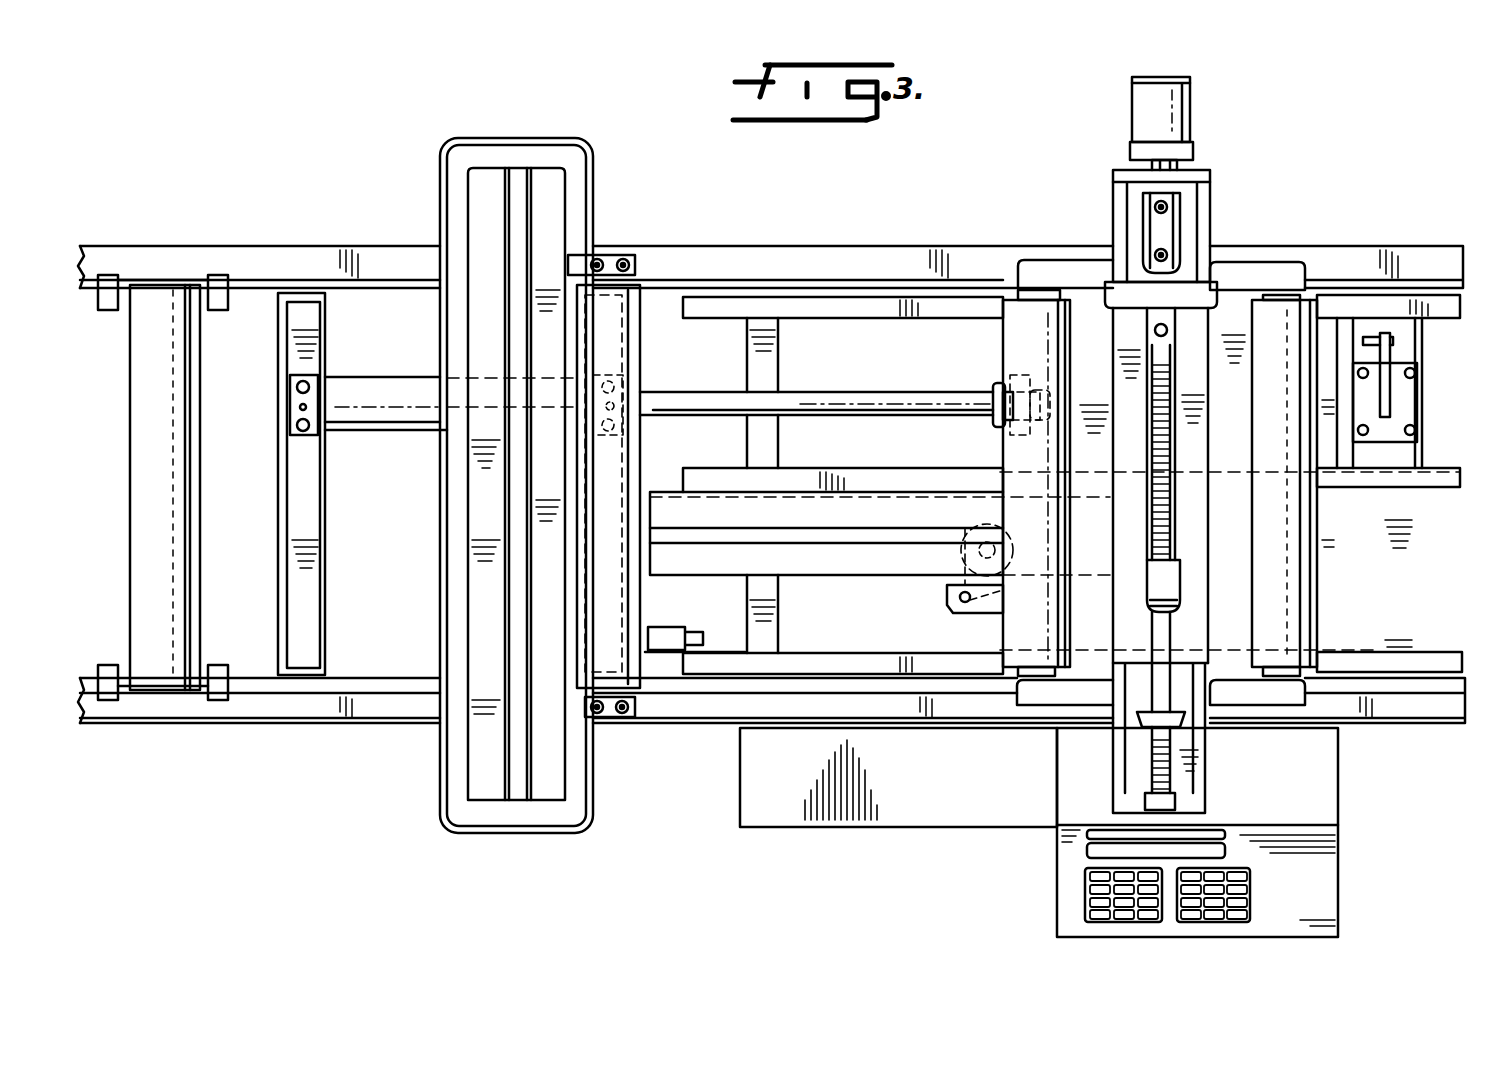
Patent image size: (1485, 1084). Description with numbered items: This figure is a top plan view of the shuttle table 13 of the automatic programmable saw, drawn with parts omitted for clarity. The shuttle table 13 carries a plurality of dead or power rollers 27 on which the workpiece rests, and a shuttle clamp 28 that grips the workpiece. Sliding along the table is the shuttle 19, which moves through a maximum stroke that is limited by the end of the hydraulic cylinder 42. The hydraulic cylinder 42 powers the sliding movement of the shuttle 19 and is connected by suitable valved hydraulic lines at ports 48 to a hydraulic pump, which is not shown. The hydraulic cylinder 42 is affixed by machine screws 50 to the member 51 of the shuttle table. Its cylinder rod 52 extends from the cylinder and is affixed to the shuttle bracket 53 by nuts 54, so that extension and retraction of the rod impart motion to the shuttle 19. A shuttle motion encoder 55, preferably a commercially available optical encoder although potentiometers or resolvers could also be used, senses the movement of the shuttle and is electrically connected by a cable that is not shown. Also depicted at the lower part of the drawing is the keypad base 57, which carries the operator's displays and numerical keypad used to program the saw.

The shuttle table 13 is at (806, 246).
The shuttle 19 is at (1228, 192).
The rollers 27 is at (134, 514).
The shuttle clamp 28 is at (1196, 90).
The hydraulic cylinder 42 is at (398, 430).
The ports 48 is at (290, 408).
The machine screws 50 is at (296, 385).
The member 51 is at (288, 540).
The cylinder rod 52 is at (880, 370).
The shuttle bracket 53 is at (1020, 343).
The nuts 54 is at (1008, 435).
The shuttle motion encoder 55 is at (952, 583).
The keypad base 57 is at (1056, 890).